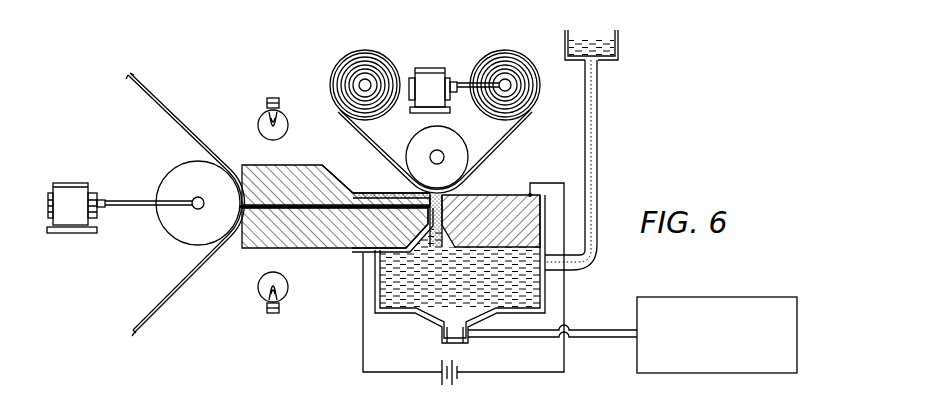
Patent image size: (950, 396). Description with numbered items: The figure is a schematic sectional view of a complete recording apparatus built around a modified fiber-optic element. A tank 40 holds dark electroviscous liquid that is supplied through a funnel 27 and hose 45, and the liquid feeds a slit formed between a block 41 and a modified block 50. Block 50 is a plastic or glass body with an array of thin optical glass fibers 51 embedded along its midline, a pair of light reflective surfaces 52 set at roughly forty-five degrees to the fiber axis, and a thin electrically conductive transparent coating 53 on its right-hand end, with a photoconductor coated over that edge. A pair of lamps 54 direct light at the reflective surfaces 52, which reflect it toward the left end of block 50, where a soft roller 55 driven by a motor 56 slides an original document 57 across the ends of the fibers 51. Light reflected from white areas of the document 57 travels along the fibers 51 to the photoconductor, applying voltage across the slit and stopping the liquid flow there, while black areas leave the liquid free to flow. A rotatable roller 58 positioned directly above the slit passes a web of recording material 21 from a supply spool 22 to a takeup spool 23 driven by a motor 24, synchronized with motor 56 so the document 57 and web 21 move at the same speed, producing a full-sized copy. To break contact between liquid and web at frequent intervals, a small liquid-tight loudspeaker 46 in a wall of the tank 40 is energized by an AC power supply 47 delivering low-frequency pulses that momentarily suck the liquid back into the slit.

The web of recording material 21 is at (503, 138).
The supply spool 22 is at (365, 50).
The takeup spool 23 is at (505, 50).
The motor 24 is at (425, 68).
The funnel 27 is at (620, 43).
The tank 40 is at (398, 315).
The block 41 is at (480, 195).
The hose 45 is at (600, 128).
The loudspeaker 46 is at (438, 330).
The AC power supply 47 is at (637, 357).
The block 50 is at (239, 160).
The optical glass fibers 51 is at (323, 176).
The light reflective surfaces 52 is at (277, 166).
The electrically conductive transparent coating 53 is at (353, 195).
The lamps 54 is at (289, 126).
The soft roller 55 is at (170, 168).
The motor 56 is at (72, 183).
The document 57 is at (166, 114).
The rotatable roller 58 is at (413, 137).